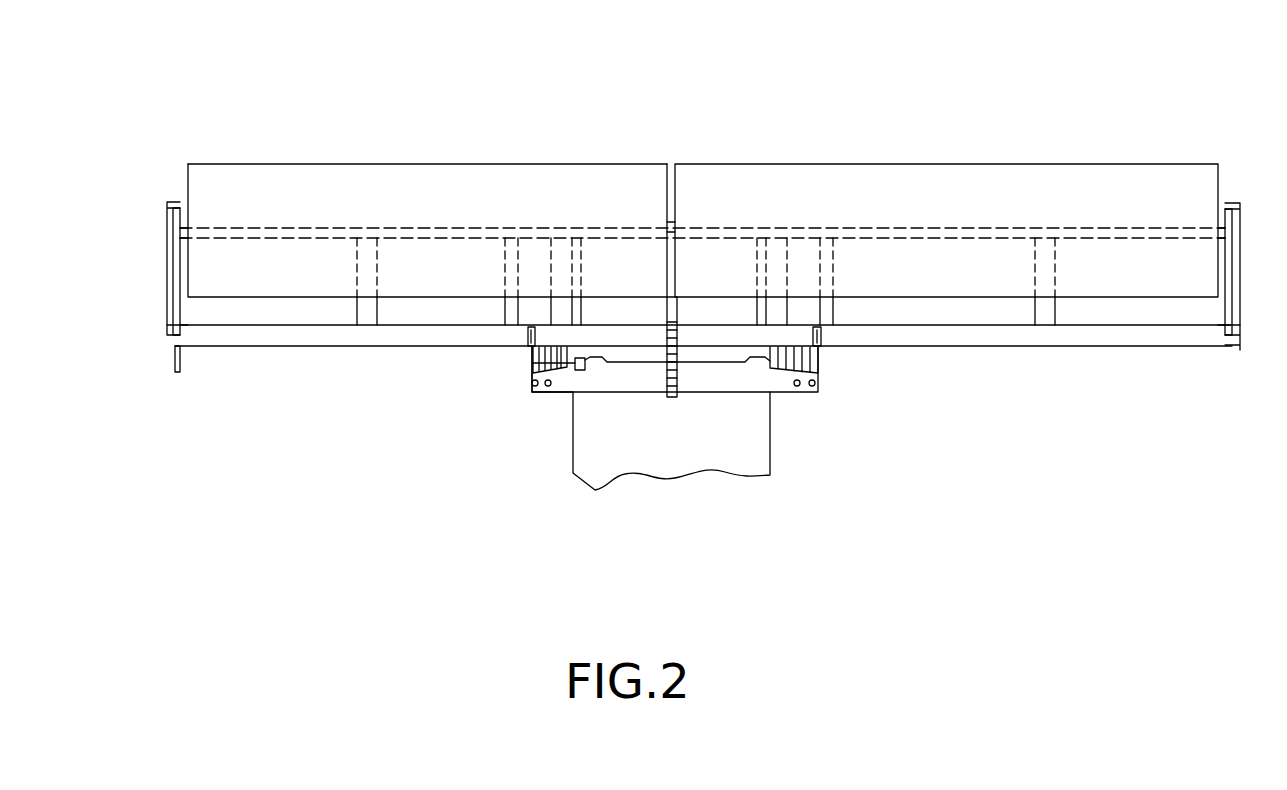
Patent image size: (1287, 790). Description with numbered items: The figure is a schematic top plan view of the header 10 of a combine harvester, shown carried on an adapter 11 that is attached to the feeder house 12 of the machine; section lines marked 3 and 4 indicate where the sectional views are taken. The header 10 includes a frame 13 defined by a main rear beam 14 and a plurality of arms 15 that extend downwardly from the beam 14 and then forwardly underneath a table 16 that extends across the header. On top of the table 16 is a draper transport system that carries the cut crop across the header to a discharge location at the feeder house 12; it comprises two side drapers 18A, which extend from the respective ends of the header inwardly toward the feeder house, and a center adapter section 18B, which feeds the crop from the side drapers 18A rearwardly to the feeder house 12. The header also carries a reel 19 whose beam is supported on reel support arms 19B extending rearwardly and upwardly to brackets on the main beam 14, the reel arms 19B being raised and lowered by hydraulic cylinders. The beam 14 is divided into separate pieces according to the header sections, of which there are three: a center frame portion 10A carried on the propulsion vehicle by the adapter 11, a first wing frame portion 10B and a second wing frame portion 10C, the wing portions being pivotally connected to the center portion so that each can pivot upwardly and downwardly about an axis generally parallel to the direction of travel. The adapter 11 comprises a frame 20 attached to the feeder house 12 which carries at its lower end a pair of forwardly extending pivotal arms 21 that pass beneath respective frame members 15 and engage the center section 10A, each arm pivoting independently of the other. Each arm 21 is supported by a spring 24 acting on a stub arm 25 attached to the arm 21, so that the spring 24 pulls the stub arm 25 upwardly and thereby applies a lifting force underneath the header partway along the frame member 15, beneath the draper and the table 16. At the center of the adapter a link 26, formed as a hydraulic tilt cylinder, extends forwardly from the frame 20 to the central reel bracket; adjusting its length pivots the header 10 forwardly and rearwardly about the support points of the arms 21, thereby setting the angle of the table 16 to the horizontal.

The section line 3- 3 is at (187, 145).
The section line 4- 4 is at (591, 142).
The header 10 is at (168, 154).
The center frame portion 10A is at (743, 259).
The first wing frame portion 10B is at (285, 356).
The second wing frame portion 10C is at (1034, 365).
The adapter 11 is at (558, 383).
The feeder house 12 is at (763, 447).
The frame 13 is at (339, 353).
The main rear beam 14 is at (415, 347).
The arms 15 is at (367, 268).
The table 16 is at (265, 257).
The side drapers 18A is at (333, 253).
The center adapter section 18B is at (631, 266).
The reel 19 is at (543, 153).
The reel support arms 19B is at (676, 222).
The frame 20 is at (720, 382).
The pivotal arms 21 is at (562, 393).
The spring 24 is at (533, 370).
The stub arm 25 is at (530, 353).
The link 26 is at (668, 378).